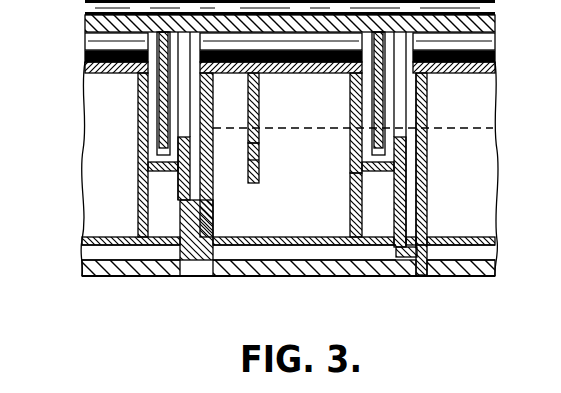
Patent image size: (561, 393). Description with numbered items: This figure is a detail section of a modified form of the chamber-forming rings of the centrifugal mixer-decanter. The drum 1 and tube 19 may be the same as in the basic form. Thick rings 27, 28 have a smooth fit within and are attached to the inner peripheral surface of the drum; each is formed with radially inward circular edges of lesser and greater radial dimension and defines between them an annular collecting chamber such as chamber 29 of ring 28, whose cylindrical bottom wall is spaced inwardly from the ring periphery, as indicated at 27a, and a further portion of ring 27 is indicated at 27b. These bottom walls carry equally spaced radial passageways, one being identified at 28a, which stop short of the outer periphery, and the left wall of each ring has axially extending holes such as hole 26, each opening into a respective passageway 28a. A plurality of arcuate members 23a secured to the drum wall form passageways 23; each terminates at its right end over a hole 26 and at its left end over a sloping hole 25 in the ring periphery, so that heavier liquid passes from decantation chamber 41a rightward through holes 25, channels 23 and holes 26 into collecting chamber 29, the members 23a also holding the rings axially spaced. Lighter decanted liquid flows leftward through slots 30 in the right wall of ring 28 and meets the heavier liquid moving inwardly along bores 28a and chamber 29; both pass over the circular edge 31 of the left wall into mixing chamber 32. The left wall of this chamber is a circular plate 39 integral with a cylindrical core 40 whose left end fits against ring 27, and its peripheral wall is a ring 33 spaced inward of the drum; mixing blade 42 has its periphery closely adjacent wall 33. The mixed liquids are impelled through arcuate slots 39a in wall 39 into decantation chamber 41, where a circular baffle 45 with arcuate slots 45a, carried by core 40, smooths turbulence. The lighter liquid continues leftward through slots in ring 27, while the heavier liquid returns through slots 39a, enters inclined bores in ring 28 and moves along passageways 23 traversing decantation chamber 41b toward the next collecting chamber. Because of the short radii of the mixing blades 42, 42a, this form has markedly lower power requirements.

The drum 1 is at (462, 278).
The tube 19 is at (94, 20).
The passageways 23 is at (244, 250).
The members 23a is at (117, 237).
The holes 25 is at (190, 240).
The holes 26 is at (398, 255).
The ring 27 is at (207, 104).
The cylindrical bottom wall 27a is at (194, 200).
The upper portion of sidewall layer 27b is at (201, 126).
The ring 28 is at (427, 148).
The radial passageway 28a is at (417, 275).
The collecting chamber 29 is at (408, 177).
The slots 30 is at (425, 120).
The circular edge of left wall 31 is at (399, 212).
The mixing chamber 32 is at (370, 146).
The ring 33 is at (387, 168).
The circular plate 39 is at (352, 173).
The arcuate slots 39a is at (352, 205).
The cylindrical core 40 is at (292, 78).
The decantation chamber 41 is at (297, 184).
The decantation chamber 41a is at (94, 160).
The decantation chamber 41b is at (482, 145).
The mixing blade 42 is at (373, 84).
The mixing blade 42a is at (158, 108).
The circular baffle 45 is at (257, 113).
The arcuate slots 45a is at (259, 159).